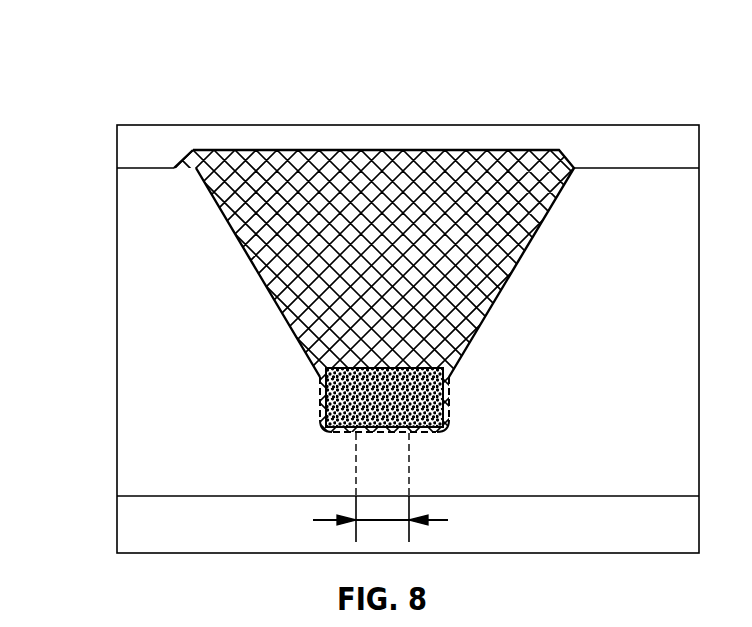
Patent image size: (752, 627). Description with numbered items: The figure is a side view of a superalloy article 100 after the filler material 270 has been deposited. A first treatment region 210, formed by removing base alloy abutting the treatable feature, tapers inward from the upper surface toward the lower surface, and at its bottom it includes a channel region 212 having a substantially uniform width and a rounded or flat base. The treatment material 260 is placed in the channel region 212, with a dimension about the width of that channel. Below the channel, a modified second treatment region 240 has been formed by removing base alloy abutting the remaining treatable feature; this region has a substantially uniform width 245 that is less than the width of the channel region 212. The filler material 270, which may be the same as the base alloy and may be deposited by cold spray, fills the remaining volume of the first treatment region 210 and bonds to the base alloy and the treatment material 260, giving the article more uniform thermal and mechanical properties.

The superalloy article 100 is at (156, 81).
The first treatment region 210 is at (266, 288).
The filler material 270 is at (238, 226).
The treatment material 260 is at (338, 400).
The channel region 212 is at (322, 408).
The modified second treatment region 240 is at (380, 465).
The width 245 is at (382, 520).